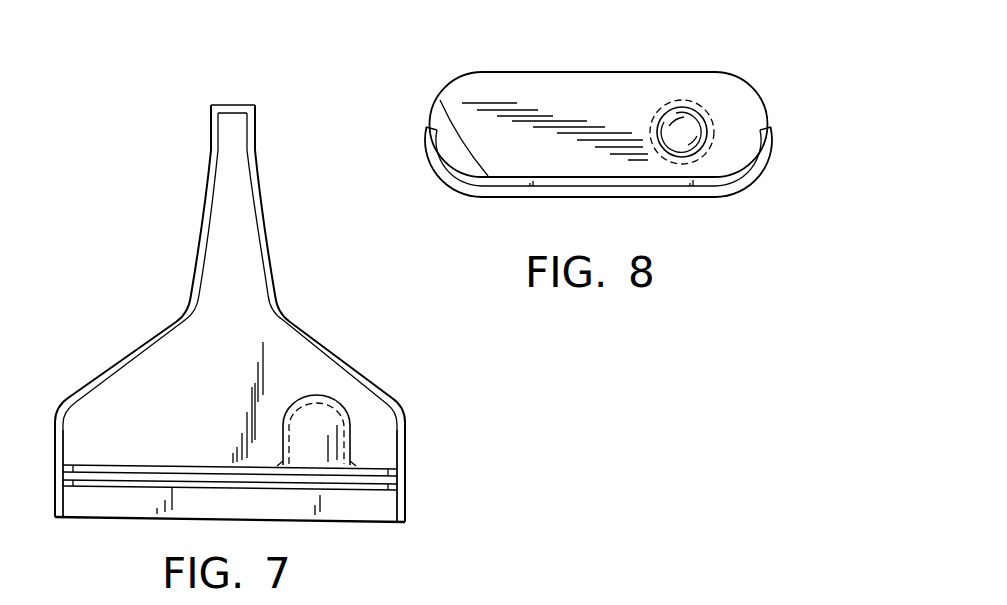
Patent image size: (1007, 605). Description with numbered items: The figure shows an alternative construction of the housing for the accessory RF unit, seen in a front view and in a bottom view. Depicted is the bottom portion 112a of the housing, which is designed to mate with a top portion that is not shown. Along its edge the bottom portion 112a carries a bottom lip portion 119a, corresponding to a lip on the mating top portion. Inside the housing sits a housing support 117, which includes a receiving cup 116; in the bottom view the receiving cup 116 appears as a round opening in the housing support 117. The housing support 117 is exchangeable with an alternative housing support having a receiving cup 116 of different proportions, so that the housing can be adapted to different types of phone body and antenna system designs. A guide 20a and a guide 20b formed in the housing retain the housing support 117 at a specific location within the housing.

In FIG. 7, the bottom portion 112a is at (260, 193).
In FIG. 8, the bottom portion 112a is at (784, 75).
In FIG. 7, the guide 20a is at (85, 465).
In FIG. 7, the guide 20b is at (120, 490).
In FIG. 8, the guide 20b is at (441, 102).
In FIG. 7, the receiving cup 116 is at (333, 402).
In FIG. 8, the receiving cup 116 is at (680, 100).
In FIG. 7, the housing support 117 is at (157, 477).
In FIG. 8, the housing support 117 is at (470, 72).
In FIG. 7, the bottom lip portion 119a is at (406, 507).
In FIG. 8, the bottom lip portion 119a is at (762, 166).